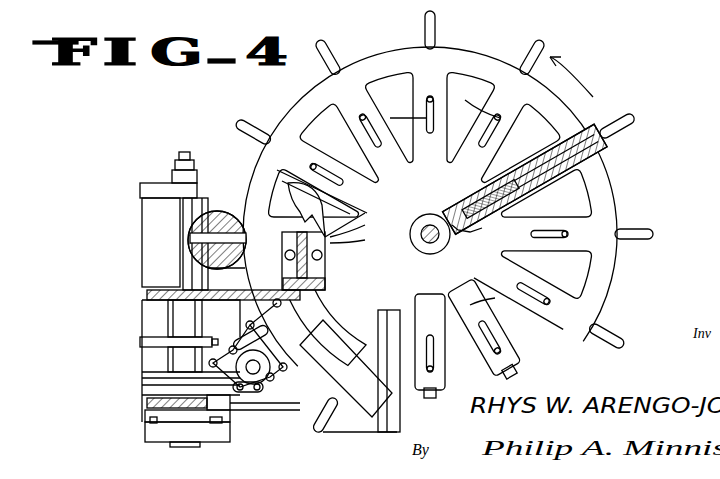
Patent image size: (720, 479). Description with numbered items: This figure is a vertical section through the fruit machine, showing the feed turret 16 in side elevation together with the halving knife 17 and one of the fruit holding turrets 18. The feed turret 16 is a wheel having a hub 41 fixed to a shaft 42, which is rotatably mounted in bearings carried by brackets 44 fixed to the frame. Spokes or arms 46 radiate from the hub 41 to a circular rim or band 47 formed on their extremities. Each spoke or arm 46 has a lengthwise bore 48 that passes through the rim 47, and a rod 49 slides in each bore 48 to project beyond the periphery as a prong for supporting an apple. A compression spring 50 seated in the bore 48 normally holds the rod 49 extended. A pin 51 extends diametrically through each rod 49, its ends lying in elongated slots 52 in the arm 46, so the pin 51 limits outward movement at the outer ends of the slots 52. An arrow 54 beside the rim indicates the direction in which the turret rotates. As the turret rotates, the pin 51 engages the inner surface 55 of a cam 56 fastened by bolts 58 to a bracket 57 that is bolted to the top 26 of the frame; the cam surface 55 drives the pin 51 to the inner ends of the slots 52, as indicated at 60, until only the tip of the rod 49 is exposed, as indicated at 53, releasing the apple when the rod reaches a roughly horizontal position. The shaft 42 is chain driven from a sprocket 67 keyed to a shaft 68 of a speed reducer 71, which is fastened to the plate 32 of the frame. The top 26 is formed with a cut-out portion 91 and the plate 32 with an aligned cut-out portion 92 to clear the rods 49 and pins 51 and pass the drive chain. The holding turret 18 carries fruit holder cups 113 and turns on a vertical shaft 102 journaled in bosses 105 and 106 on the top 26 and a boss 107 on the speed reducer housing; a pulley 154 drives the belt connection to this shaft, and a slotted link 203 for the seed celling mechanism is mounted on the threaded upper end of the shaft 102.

The feed turret 16 is at (449, 222).
The halving knife 17 is at (158, 235).
The fruit holding conveyor or turret 18 is at (212, 193).
The top of the frame 26 is at (145, 296).
The plate 32 is at (145, 403).
The hub 41 is at (433, 248).
The shaft 42 is at (420, 222).
The brackets 44 is at (410, 353).
The spokes or arms 46 is at (425, 92).
The circular rim or band 47 is at (475, 60).
The bore 48 is at (606, 130).
The rod 49 is at (425, 24).
The compression spring 50 is at (470, 230).
The pin 51 is at (434, 100).
The elongated slots 52 is at (443, 203).
The exposed tip of rod 53 is at (222, 269).
The direction of rotation 54 is at (578, 88).
The inner surface of cam 55 is at (326, 228).
The cam 56 is at (320, 307).
The bracket 57 is at (356, 229).
The bolts 58 is at (356, 241).
The inner position of pin in slots 60 is at (355, 212).
The sprocket 67 is at (252, 385).
The shaft 68 is at (225, 382).
The speed reducer 71 is at (180, 422).
The cut-out portion 91 is at (238, 302).
The cut-out portion 92 is at (230, 440).
The shaft 102 is at (185, 160).
The boss 105 is at (190, 282).
The boss 106 is at (185, 318).
The boss 107 is at (150, 370).
The fruit holder cup 113 is at (215, 212).
The pulley 154 is at (160, 338).
The link 203 is at (155, 185).